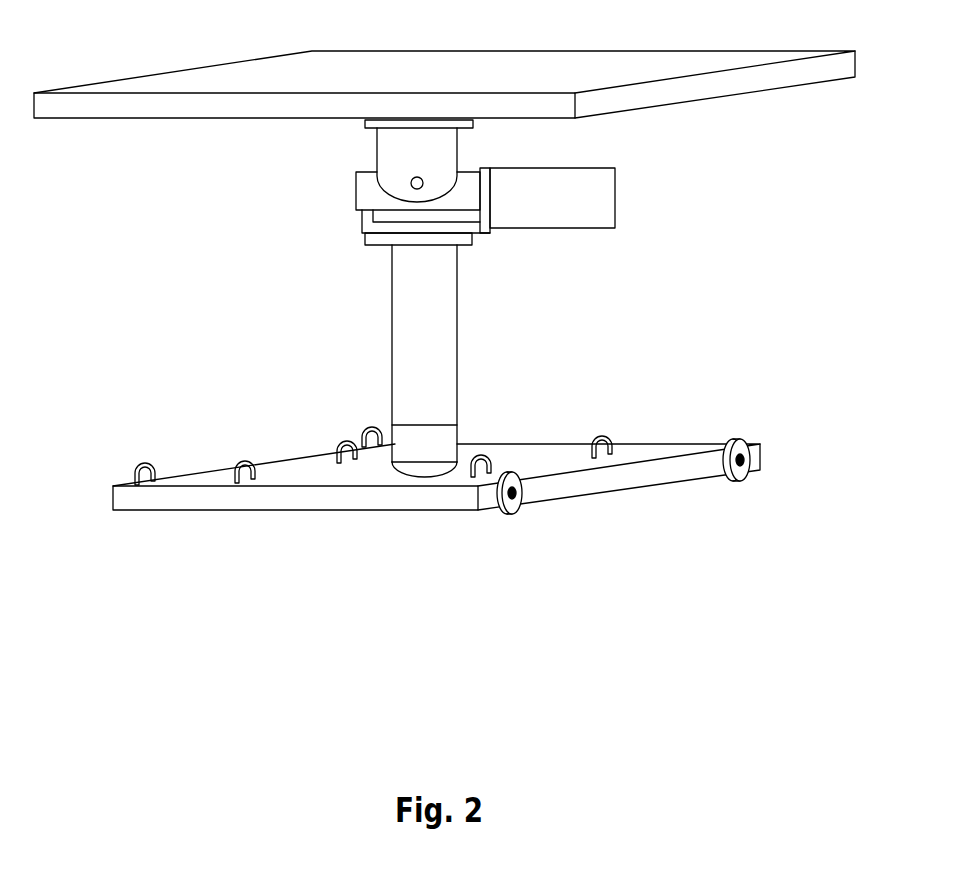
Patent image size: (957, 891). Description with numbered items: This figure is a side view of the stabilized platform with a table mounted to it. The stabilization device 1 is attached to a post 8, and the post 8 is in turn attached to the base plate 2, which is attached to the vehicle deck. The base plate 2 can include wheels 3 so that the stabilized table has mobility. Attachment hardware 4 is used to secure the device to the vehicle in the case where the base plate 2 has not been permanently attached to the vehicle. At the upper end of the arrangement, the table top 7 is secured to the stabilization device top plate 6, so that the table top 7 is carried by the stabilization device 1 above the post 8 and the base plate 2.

The stabilization device 1 is at (562, 152).
The base plate 2 is at (590, 487).
The wheels 3 is at (742, 472).
The attachment hardware 4 is at (600, 434).
The top plate 6 is at (375, 124).
The table top 7 is at (93, 112).
The post 8 is at (448, 373).